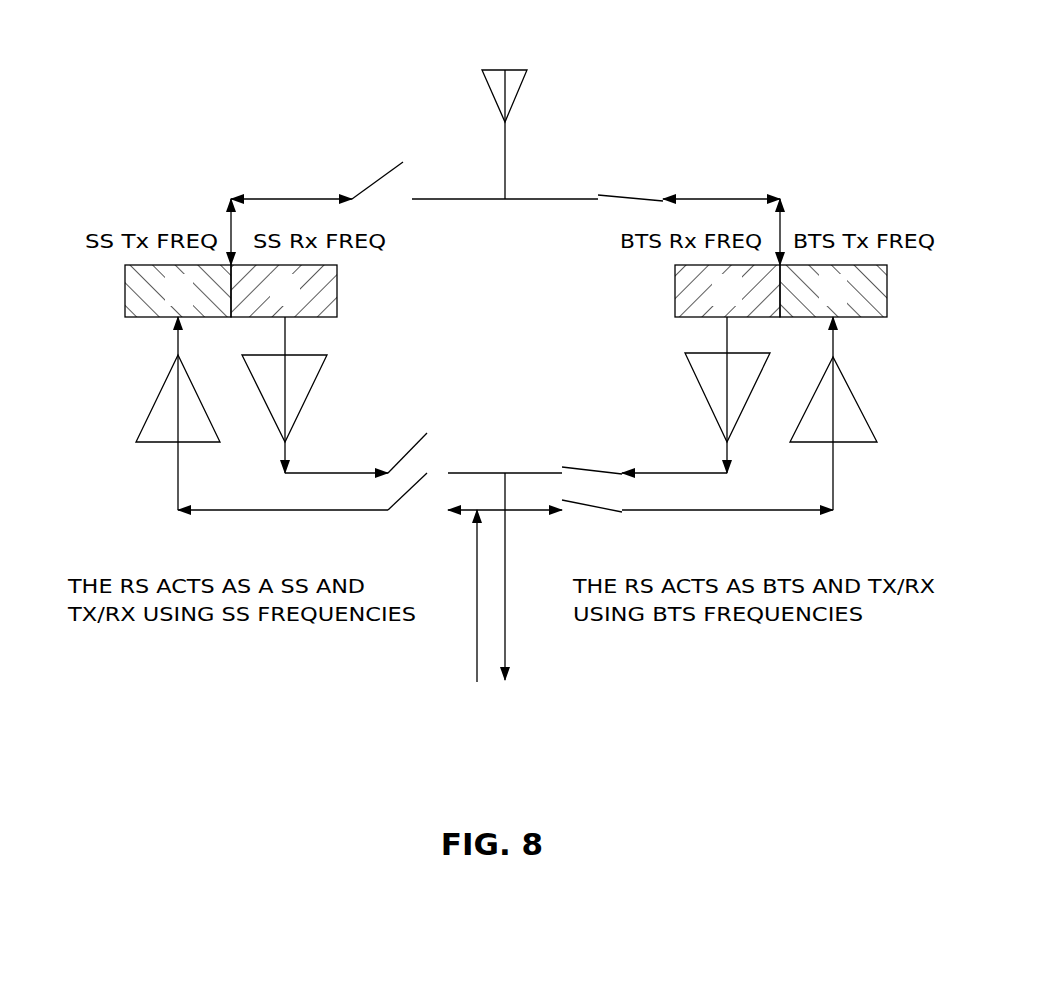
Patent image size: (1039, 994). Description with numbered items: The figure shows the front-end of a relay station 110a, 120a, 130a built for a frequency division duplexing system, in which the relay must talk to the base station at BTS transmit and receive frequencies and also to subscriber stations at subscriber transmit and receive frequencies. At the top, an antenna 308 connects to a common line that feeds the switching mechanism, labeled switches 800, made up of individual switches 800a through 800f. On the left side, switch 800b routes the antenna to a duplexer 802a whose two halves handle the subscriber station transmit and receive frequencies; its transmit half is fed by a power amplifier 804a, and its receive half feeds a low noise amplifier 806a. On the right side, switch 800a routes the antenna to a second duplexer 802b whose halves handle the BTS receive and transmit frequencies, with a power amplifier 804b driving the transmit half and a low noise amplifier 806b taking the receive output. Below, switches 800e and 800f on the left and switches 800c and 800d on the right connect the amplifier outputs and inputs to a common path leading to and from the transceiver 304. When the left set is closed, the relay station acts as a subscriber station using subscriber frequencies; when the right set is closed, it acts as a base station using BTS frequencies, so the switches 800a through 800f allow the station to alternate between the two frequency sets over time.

The relay station 110a is at (692, 350).
The relay station 120a is at (692, 350).
The relay station 130a is at (748, 48).
The antenna 308 is at (527, 80).
The switches 800 is at (621, 210).
The switch 800a is at (632, 193).
The switch 800b is at (383, 175).
The switch 800c is at (593, 465).
The switch 800d is at (583, 500).
The switch 800e is at (414, 433).
The switch 800f is at (414, 498).
The duplexer 802a is at (110, 297).
The duplexer 802b is at (900, 297).
The power amplifier 804a is at (145, 415).
The power amplifier 804b is at (865, 415).
The low noise amplifier 806a is at (325, 365).
The low noise amplifier 806b is at (690, 365).
The transceiver 304 is at (494, 735).